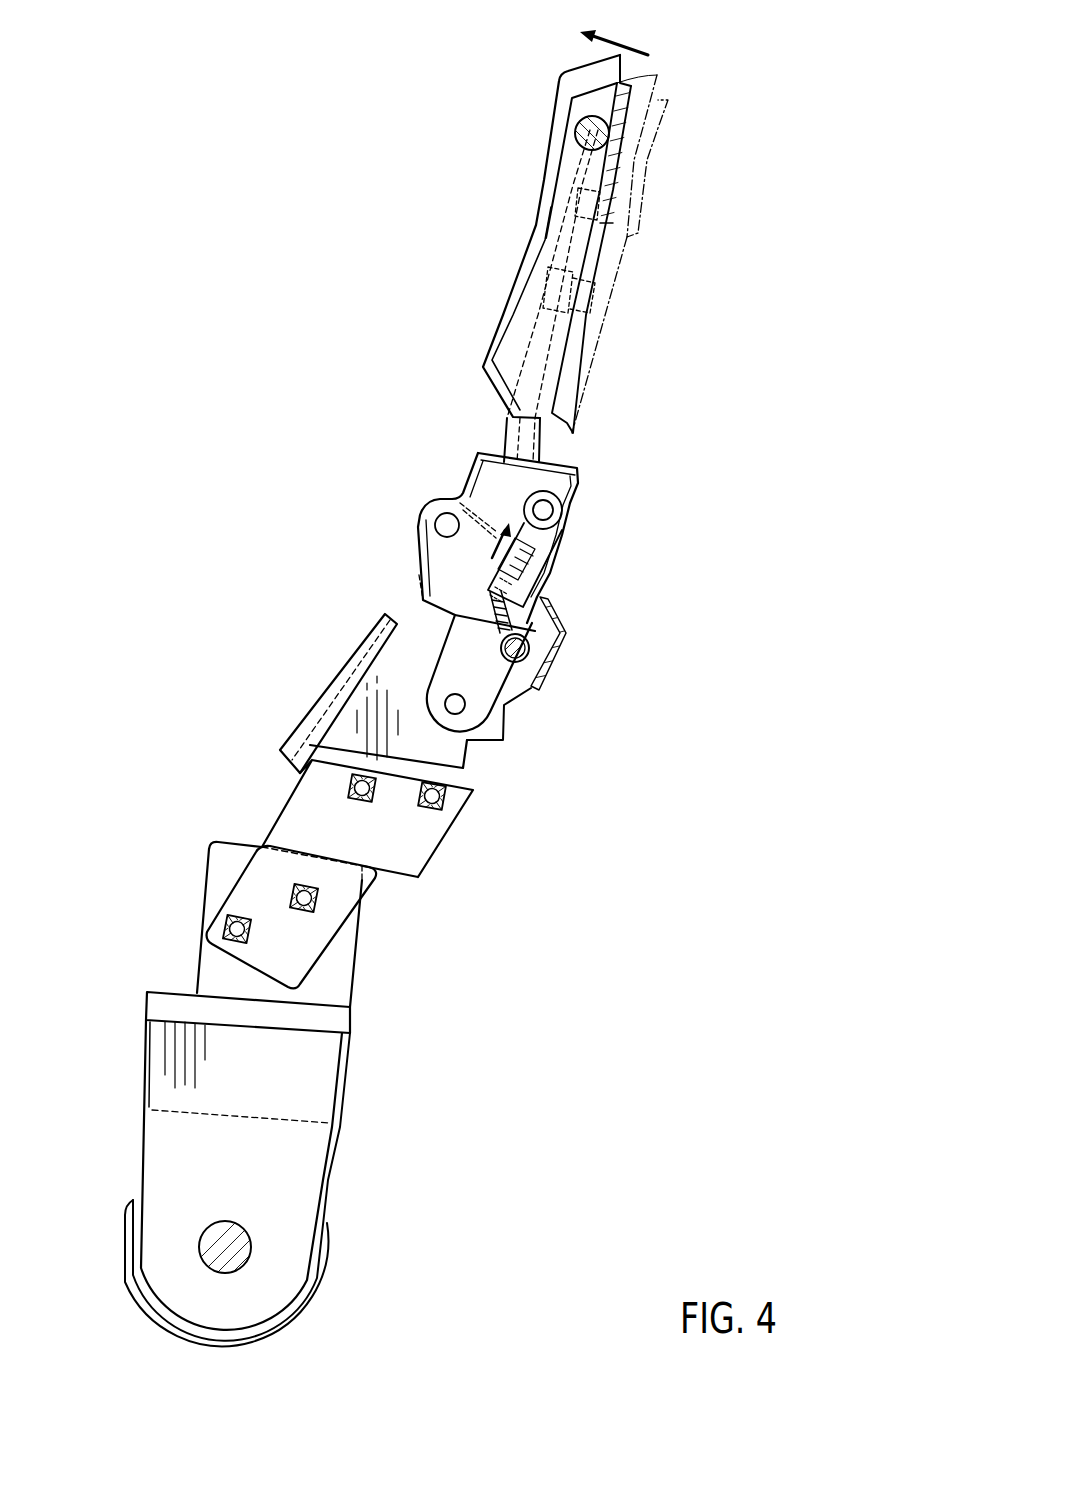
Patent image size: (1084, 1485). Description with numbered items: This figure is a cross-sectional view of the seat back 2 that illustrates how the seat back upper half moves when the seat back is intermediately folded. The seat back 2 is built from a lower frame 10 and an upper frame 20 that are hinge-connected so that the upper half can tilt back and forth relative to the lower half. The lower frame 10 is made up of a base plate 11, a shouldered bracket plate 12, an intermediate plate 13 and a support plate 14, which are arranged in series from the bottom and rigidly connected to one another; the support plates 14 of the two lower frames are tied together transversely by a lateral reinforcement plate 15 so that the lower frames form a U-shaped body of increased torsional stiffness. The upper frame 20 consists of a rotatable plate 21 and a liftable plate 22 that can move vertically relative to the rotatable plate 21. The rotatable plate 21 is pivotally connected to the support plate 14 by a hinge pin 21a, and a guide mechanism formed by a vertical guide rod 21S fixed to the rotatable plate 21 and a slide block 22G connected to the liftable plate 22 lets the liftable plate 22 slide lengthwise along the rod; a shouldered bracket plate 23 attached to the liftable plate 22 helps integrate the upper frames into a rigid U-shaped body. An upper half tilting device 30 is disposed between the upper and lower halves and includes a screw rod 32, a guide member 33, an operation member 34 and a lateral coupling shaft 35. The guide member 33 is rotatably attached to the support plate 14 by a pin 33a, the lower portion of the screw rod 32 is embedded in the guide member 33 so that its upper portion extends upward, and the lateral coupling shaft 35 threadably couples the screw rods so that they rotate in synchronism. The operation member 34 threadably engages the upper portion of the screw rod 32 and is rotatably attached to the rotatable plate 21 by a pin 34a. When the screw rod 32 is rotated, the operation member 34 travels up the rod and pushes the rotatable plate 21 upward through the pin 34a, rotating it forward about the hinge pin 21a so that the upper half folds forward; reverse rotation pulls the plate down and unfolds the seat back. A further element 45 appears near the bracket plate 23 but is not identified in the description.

The seat back 2 is at (262, 428).
The lower frame 10 is at (266, 730).
The base plate 11 is at (307, 1070).
The shouldered bracket plate 12 is at (320, 920).
The intermediate plate 13 is at (470, 758).
The support plate 14 is at (492, 722).
The lateral reinforcement plate 15 is at (546, 665).
The upper frame 20 is at (410, 386).
The rotatable plate 21 is at (453, 560).
The hinge pin 21a is at (443, 518).
The vertical guide rod 21S is at (547, 317).
The liftable plate 22 is at (512, 368).
The slide block 22G is at (545, 290).
The shouldered bracket plate 23 is at (622, 136).
The upper half tilting device 30 is at (598, 477).
The screw rod 32 is at (520, 615).
The guide member 33 is at (463, 652).
The pin 33a is at (466, 702).
The operation member 34 is at (553, 545).
The pin 34a is at (548, 508).
The lateral coupling shaft 35 is at (531, 647).
The pin 45 is at (575, 122).